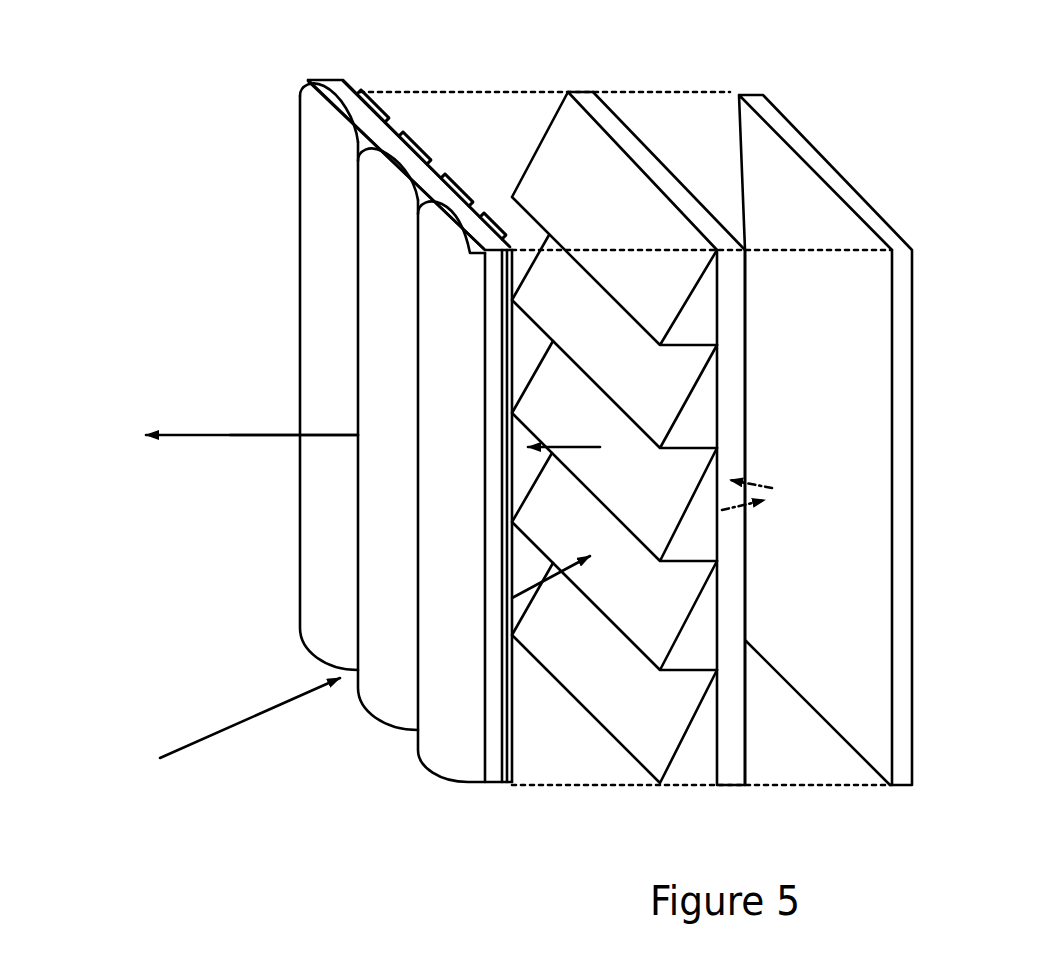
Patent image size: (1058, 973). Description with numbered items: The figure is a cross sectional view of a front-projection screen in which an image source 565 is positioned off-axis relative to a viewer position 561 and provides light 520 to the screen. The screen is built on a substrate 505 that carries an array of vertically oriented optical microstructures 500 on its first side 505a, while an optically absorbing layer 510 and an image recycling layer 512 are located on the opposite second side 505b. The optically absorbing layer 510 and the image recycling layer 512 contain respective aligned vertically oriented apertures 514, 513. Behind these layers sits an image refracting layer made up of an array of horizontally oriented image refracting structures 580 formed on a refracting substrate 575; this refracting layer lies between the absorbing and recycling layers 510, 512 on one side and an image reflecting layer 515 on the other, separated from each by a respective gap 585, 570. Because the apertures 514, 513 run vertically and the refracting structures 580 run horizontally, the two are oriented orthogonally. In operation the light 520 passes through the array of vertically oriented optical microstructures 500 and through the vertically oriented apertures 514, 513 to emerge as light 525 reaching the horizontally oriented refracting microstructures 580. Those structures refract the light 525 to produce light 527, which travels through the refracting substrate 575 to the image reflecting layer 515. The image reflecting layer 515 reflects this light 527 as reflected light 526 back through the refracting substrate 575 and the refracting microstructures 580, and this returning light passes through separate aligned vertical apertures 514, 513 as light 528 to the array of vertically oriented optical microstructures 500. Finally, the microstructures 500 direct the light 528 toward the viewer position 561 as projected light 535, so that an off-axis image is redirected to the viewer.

The array of vertically oriented optical microstructures 500 is at (303, 143).
The substrate 505 is at (375, 125).
The first side of the substrate 505a is at (358, 157).
The second side of the substrate 505b is at (395, 140).
The vertically oriented aperture 513 is at (413, 64).
The vertically oriented aperture 514 is at (431, 164).
The optically absorbing layer 510 is at (504, 786).
The image recycling layer 512 is at (508, 788).
The image reflecting layer 515 is at (886, 218).
The light 520 is at (375, 432).
The light 525 is at (552, 580).
The reflected light 526 is at (748, 484).
The light 527 is at (725, 512).
The light 528 is at (565, 447).
The projected light 535 is at (260, 435).
The viewer position 561 is at (112, 412).
The image source 565 is at (108, 735).
The gap 570 is at (838, 471).
The refracting substrate 575 is at (614, 128).
The horizontally oriented image refracting structures 580 is at (568, 152).
The gap 585 is at (622, 444).